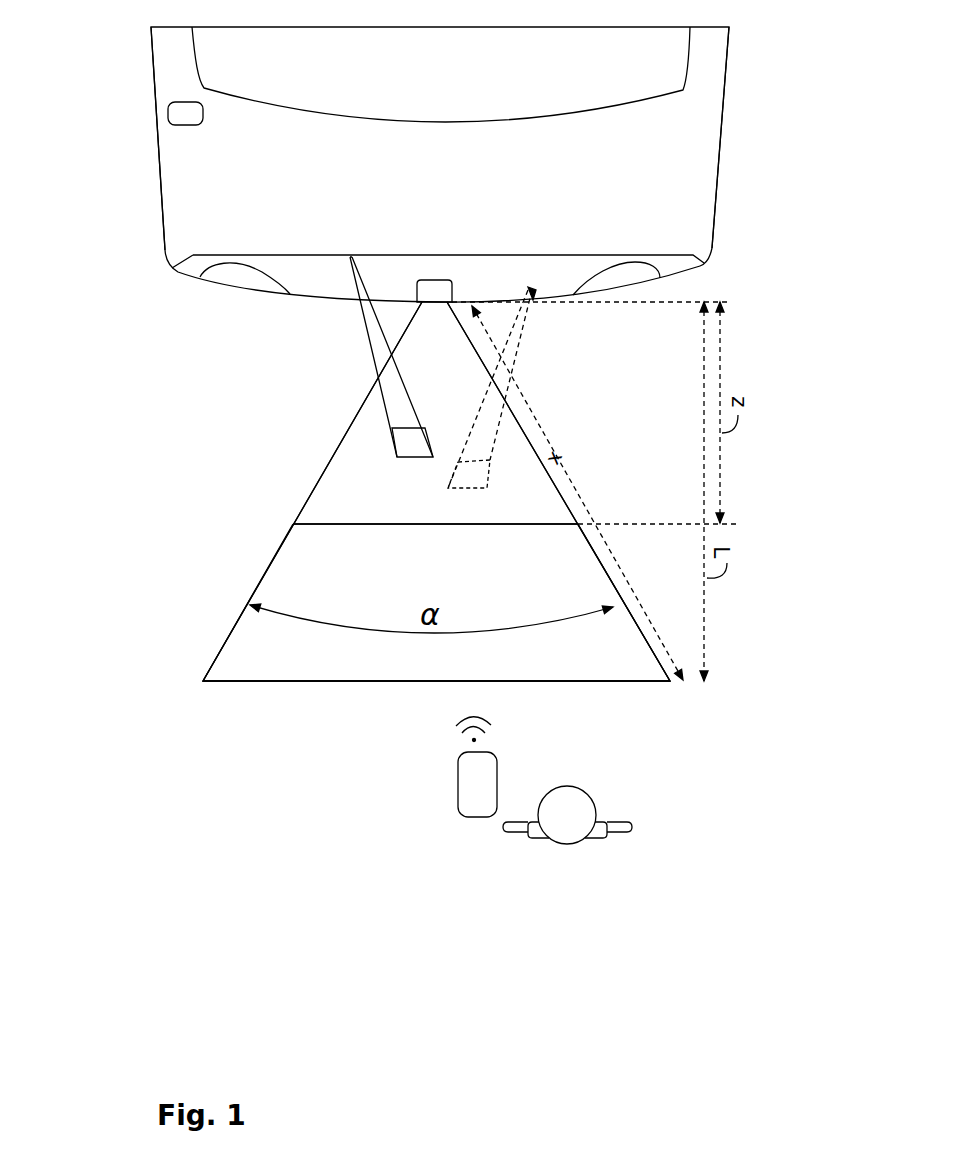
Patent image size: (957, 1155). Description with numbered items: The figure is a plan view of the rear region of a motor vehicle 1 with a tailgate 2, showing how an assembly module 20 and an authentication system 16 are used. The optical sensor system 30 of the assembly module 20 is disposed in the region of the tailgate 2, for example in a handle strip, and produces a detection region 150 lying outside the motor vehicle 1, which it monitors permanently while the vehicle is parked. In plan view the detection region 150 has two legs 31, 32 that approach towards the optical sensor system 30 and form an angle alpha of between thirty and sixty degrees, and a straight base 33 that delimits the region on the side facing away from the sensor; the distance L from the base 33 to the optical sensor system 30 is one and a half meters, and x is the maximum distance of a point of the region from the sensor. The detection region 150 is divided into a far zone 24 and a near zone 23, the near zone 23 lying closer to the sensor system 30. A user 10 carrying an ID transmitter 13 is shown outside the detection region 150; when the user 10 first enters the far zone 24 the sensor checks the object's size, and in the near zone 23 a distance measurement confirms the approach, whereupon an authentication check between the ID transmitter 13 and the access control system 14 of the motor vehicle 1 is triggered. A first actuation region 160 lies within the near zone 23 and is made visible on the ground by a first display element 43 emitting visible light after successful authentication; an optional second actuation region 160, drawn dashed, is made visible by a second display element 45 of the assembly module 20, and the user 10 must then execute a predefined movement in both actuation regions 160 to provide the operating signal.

The motor vehicle 1 is at (758, 93).
The tailgate 2 is at (693, 177).
The user 10 is at (648, 830).
The ID transmitter 13 is at (478, 788).
The access control system 14 is at (183, 115).
The authentication system 16 is at (138, 194).
The assembly module 20 is at (272, 352).
The near zone 23 is at (362, 488).
The far zone 24 is at (310, 572).
The optical sensor system 30 is at (415, 296).
The leg 31 is at (220, 652).
The leg 32 is at (637, 628).
The base 33 is at (297, 681).
The first display element 43 is at (348, 258).
The second display element 45 is at (533, 293).
The detection region 150 is at (242, 458).
The actuation region 160 is at (407, 448).